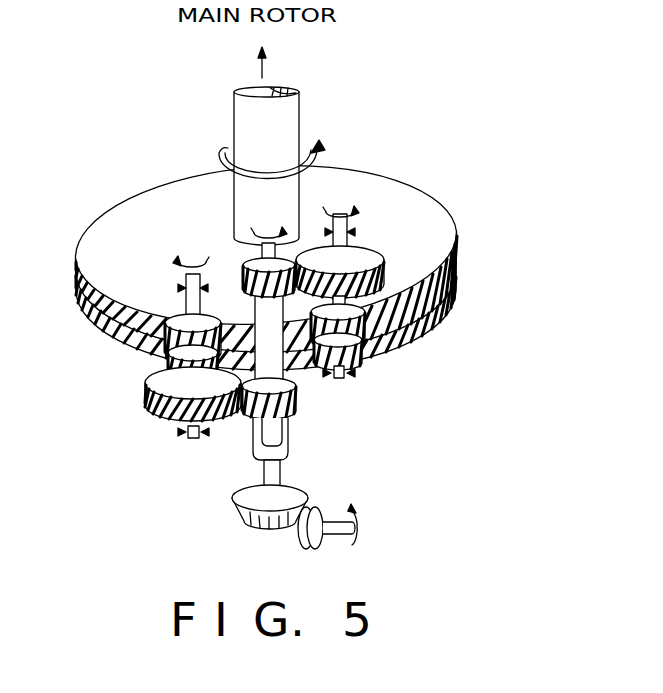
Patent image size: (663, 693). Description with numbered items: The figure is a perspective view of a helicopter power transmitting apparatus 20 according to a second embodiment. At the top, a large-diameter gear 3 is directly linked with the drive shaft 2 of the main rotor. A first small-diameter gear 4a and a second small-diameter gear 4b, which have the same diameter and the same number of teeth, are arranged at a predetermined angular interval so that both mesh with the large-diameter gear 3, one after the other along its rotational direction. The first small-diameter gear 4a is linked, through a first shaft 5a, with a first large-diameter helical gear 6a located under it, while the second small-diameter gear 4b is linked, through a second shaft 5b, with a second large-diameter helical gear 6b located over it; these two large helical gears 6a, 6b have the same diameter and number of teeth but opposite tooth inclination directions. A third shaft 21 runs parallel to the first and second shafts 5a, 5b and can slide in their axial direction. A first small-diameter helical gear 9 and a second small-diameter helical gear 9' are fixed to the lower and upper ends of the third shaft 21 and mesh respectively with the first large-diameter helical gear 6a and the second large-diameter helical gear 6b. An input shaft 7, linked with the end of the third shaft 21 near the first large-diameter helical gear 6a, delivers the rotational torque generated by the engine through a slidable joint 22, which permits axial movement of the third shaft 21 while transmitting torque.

The helicopter power transmitting apparatus 20 is at (538, 93).
The drive shaft of a main rotor 2 is at (273, 132).
The large-diameter gear 3 is at (417, 218).
The second small-diameter helical gear 9' is at (233, 243).
The second large-diameter helical gear 6b is at (360, 253).
The second shaft 5b is at (437, 326).
The second small-diameter gear 4b is at (357, 360).
The first shaft 5a is at (165, 291).
The first small-diameter gear 4a is at (162, 364).
The first large-diameter helical gear 6a is at (150, 400).
The first small-diameter helical gear 9 is at (239, 426).
The third shaft 21 is at (272, 357).
The slidable joint 22 is at (288, 440).
The input shaft 7 is at (272, 470).